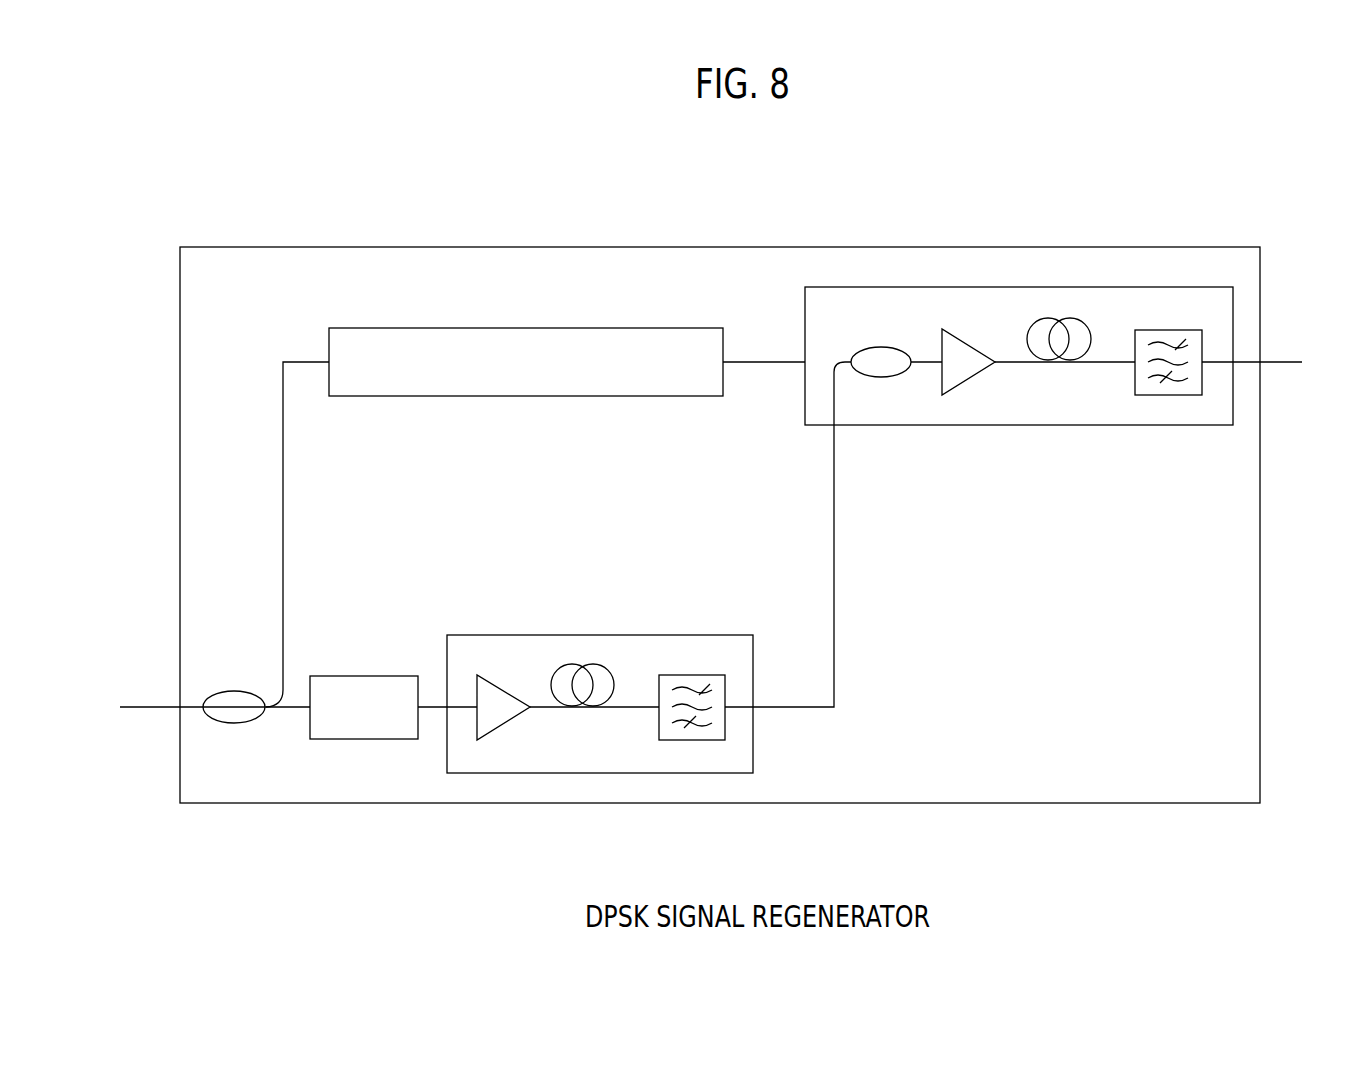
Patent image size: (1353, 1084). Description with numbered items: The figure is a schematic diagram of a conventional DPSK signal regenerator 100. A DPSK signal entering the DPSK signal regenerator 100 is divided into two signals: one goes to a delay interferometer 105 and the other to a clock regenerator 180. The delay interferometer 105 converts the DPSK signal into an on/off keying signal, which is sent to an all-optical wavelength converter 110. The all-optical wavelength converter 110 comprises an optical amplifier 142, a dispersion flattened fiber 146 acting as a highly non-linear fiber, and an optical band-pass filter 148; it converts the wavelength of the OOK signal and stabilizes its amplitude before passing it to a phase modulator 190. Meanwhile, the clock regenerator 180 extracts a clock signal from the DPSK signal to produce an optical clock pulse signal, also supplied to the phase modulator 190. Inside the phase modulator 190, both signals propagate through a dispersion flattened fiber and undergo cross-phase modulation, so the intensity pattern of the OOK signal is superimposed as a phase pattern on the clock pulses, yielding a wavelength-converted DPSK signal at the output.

The DPSK signal regenerator 100 is at (1058, 247).
The delay interferometer 105 is at (362, 676).
The all-optical wavelength converter 110 is at (610, 773).
The optical amplifier 142 is at (503, 690).
The dispersion flattened fiber 146 is at (585, 664).
The optical band-pass filter 148 is at (688, 675).
The clock regenerator 180 is at (620, 328).
The phase modulator 190 is at (1107, 425).